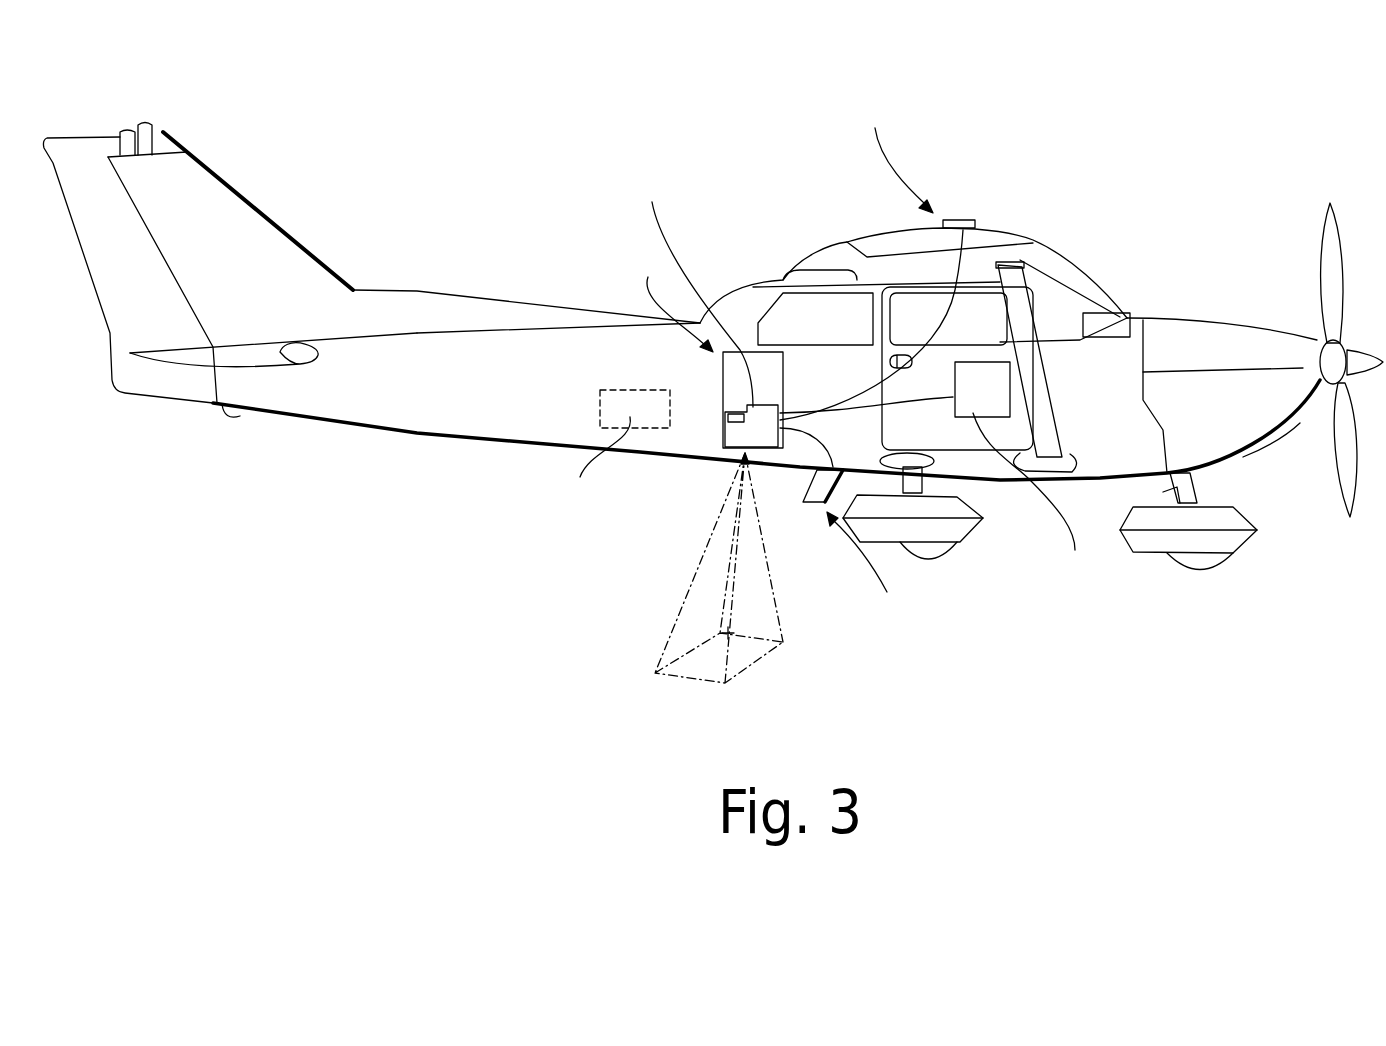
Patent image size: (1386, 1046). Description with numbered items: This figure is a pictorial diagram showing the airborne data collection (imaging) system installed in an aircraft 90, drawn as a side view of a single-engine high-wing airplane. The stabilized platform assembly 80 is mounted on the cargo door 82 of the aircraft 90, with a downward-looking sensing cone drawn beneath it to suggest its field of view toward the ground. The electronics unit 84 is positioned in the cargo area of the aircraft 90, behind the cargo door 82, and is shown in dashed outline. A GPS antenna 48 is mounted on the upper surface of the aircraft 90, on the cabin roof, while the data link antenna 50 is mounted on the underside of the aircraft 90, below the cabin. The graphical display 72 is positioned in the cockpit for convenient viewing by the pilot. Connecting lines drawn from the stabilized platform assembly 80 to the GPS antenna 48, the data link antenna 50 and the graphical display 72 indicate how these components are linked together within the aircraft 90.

The aircraft 90 is at (443, 292).
The cargo door 82 is at (775, 363).
The stabilized platform assembly 80 is at (742, 400).
The electronics unit 84 is at (640, 390).
The graphical display 72 is at (1037, 474).
The GPS antenna 48 is at (955, 220).
The data link antenna 50 is at (813, 505).